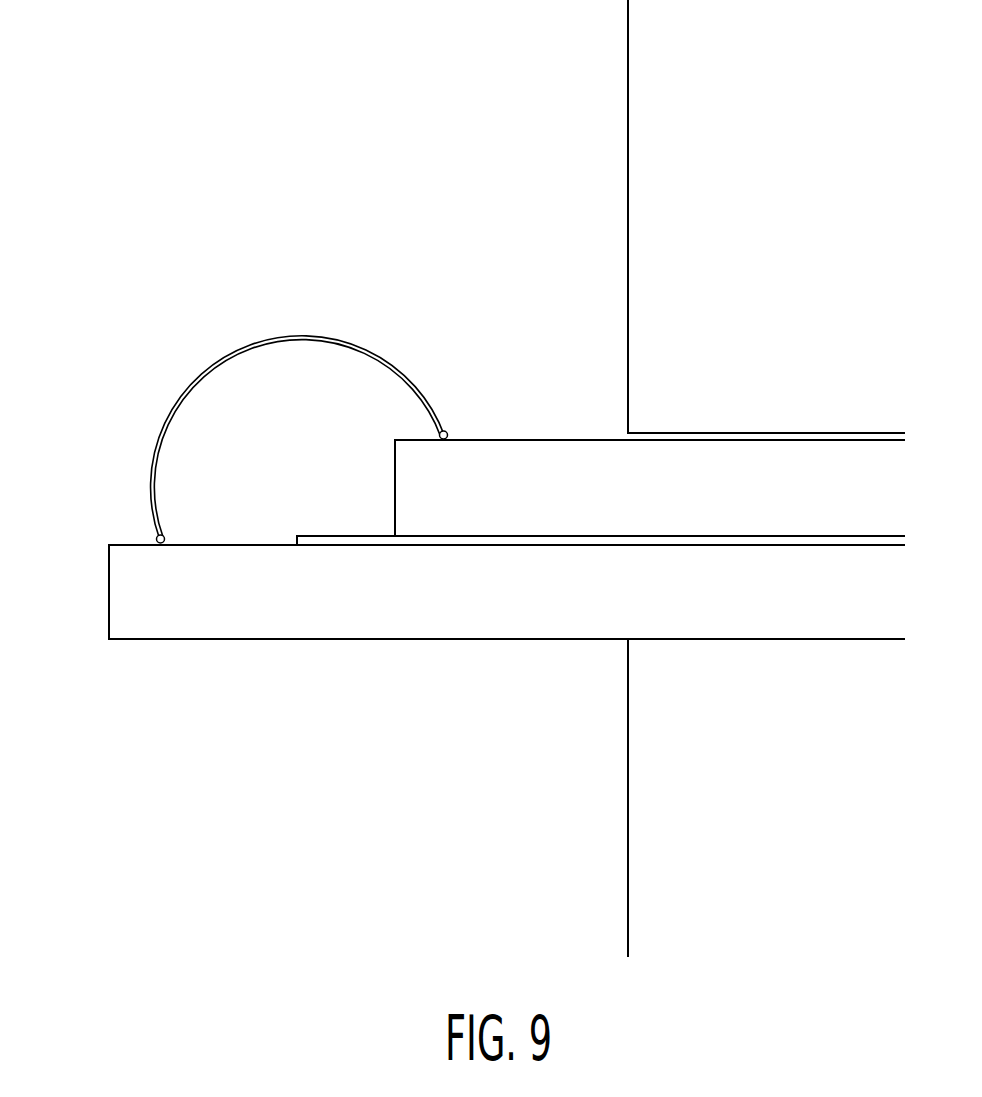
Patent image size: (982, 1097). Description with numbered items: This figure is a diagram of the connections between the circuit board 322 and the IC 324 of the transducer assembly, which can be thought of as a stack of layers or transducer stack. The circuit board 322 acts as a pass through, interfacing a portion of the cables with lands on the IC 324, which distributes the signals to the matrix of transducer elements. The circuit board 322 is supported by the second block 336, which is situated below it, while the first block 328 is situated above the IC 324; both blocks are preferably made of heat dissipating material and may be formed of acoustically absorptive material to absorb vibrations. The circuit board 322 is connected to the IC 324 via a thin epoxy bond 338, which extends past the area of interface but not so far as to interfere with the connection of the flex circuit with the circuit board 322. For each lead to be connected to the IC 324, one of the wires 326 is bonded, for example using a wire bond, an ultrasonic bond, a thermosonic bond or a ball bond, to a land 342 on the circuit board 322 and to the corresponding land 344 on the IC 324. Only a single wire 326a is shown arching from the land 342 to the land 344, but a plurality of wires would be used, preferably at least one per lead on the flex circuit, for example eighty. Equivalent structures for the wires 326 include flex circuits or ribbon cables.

The circuit board 322 is at (153, 642).
The IC 324 is at (524, 437).
The wires 326 is at (308, 345).
The wire 326a is at (158, 445).
The first block 328 is at (788, 181).
The second block 336 is at (788, 859).
The thin epoxy bond 338 is at (326, 551).
The land on the circuit board 342 is at (156, 538).
The land on the IC 344 is at (447, 431).